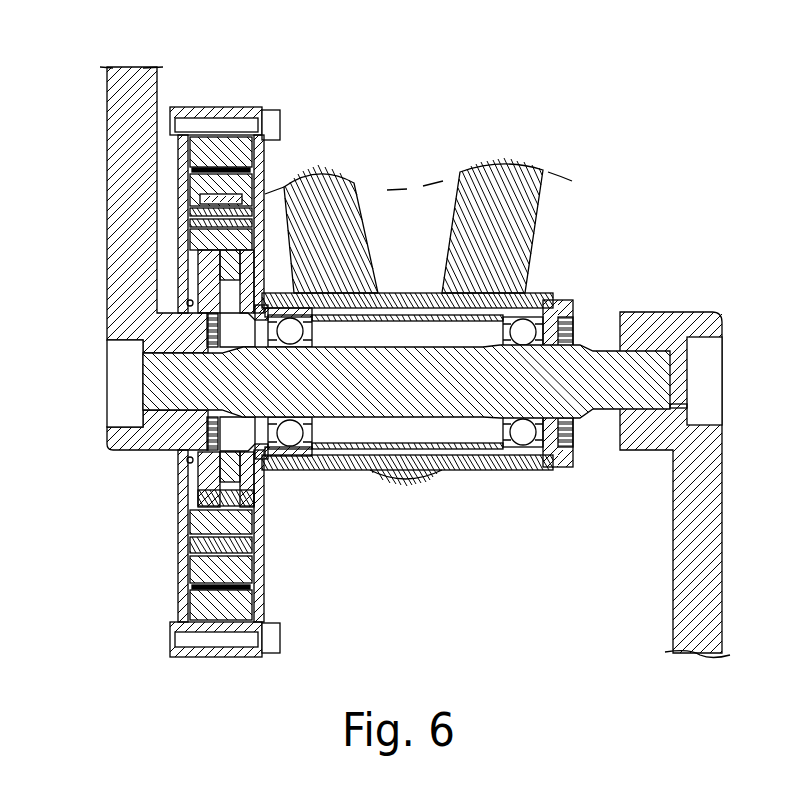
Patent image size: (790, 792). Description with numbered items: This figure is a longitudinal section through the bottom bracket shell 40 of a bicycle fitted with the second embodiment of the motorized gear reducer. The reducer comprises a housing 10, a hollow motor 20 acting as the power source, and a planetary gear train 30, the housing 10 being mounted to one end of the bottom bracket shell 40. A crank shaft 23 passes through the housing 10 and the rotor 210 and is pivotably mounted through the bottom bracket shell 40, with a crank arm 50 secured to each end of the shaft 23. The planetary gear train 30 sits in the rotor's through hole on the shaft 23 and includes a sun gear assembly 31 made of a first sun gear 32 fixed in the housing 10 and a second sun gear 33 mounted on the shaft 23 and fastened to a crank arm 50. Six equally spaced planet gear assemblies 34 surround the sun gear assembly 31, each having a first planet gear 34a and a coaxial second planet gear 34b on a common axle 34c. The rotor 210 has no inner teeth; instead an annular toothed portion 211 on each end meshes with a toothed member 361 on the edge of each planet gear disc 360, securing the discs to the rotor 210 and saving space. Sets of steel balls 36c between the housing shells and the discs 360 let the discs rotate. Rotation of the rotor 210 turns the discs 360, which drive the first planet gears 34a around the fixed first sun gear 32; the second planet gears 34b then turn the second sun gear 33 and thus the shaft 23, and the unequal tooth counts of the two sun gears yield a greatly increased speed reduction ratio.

The housing 10 is at (207, 103).
The motor 20 is at (186, 220).
The rotor 210 is at (188, 190).
The annular toothed portion 211 is at (188, 202).
The toothed member 361 is at (188, 209).
The planet gear disc 360 is at (188, 221).
The steel balls 36c is at (186, 303).
The crank arm 50 is at (130, 318).
The bottom bracket shell 40 is at (494, 215).
The shaft 23 is at (477, 390).
The sun gear assembly 31 is at (285, 493).
The first sun gear 32 is at (267, 490).
The second sun gear 33 is at (267, 505).
The planetary gear train 30 is at (215, 553).
The planet gear assembly 34 is at (155, 544).
The first planet gear 34a is at (188, 568).
The second planet gear 34b is at (188, 536).
The axle 34c is at (188, 515).